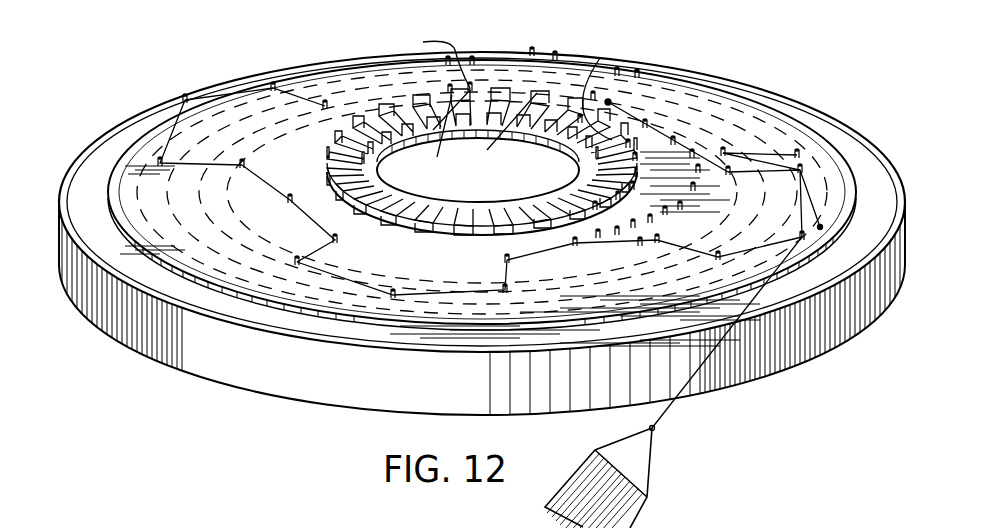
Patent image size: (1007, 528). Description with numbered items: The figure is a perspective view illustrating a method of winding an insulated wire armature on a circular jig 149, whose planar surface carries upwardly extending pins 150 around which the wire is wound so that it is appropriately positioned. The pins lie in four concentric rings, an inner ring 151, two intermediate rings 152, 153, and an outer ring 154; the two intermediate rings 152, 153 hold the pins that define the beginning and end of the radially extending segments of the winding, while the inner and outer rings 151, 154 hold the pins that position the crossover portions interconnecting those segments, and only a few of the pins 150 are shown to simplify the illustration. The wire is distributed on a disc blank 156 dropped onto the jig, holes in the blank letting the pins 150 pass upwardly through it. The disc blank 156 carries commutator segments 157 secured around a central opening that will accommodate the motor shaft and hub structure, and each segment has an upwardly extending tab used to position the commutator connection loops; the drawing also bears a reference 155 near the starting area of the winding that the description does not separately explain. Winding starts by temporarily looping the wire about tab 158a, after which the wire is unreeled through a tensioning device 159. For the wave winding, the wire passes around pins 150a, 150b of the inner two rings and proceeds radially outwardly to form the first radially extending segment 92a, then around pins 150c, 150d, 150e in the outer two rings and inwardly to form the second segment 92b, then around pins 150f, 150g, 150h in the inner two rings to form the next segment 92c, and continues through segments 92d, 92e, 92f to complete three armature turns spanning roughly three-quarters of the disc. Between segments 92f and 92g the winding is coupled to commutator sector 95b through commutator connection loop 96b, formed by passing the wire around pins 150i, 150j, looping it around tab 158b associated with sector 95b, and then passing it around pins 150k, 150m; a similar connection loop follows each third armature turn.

The circular jig 149 is at (190, 335).
The pins 150 is at (675, 208).
The pin 150a is at (675, 115).
The pin 150b is at (740, 140).
The pin 150c is at (797, 155).
The pin 150d is at (825, 179).
The pin 150e is at (722, 260).
The pin 150f is at (673, 233).
The pin 150g is at (575, 243).
The pin 150h is at (500, 254).
The pin 150i is at (234, 102).
The pin 150j is at (346, 93).
The pin 150k is at (445, 100).
The pin 150m is at (500, 88).
The inner ring 151 is at (262, 145).
The intermediate ring 152 is at (262, 203).
The intermediate ring 153 is at (205, 226).
The outer ring 154 is at (140, 246).
The wire terminal 155 is at (608, 102).
The disc blank 156 is at (280, 290).
The commutator segments 157 is at (493, 150).
The tab 158a is at (609, 88).
The tab 158b is at (493, 140).
The tensioning device 159 is at (640, 507).
The first radially extending segment 92a is at (756, 172).
The second radially extending segment 92b is at (657, 248).
The radial segment 92c is at (503, 278).
The radial segment 92d is at (335, 242).
The radial segment 92e is at (185, 168).
The radial segment 92f is at (325, 106).
The radial segment 92g is at (431, 60).
The commutator sector 95b is at (440, 150).
The commutator connection loop 96b is at (412, 150).